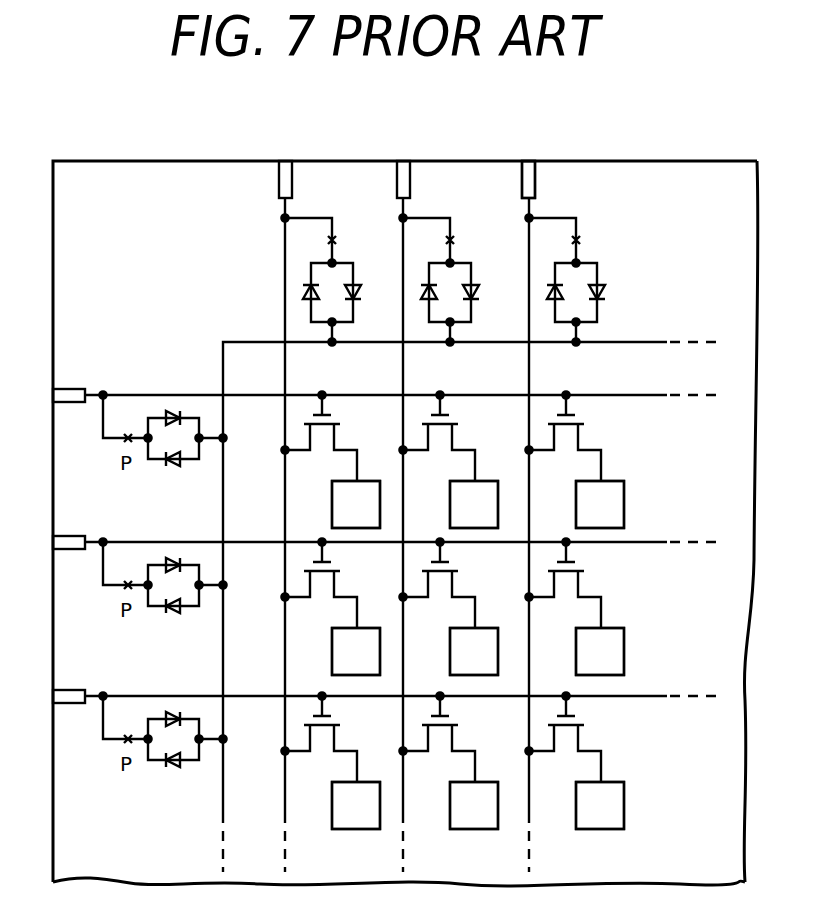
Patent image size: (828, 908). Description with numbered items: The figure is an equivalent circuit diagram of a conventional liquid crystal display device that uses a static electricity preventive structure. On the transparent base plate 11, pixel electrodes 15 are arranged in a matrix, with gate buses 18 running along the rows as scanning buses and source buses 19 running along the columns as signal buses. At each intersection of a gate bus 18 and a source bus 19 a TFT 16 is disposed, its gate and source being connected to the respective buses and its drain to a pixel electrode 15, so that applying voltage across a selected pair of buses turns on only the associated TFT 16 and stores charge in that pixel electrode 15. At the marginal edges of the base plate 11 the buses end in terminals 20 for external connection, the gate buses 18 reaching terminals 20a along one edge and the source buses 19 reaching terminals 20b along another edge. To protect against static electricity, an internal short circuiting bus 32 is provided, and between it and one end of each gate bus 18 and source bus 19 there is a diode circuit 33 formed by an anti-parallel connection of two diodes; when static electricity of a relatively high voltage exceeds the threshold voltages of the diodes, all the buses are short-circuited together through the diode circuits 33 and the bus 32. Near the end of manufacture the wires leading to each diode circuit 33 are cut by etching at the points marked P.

The transparent base plate 11 is at (126, 161).
The pixel electrode 15 is at (331, 490).
The TFT 16 is at (341, 415).
The gate bus 18 is at (638, 392).
The source bus 19 is at (287, 845).
The terminal 20 is at (279, 184).
The terminal 20a is at (78, 388).
The terminal 20b is at (530, 180).
The internal short circuiting bus 32 is at (225, 785).
The diode circuit 33 is at (587, 280).